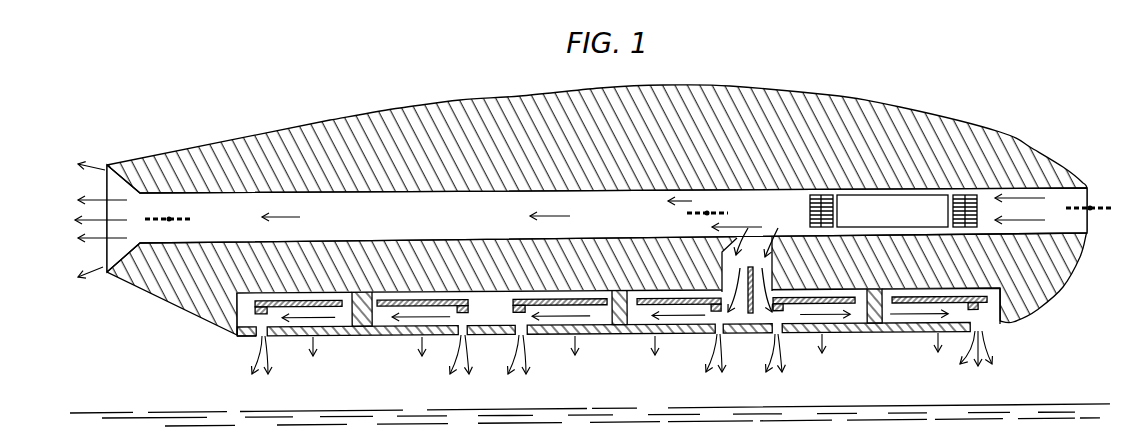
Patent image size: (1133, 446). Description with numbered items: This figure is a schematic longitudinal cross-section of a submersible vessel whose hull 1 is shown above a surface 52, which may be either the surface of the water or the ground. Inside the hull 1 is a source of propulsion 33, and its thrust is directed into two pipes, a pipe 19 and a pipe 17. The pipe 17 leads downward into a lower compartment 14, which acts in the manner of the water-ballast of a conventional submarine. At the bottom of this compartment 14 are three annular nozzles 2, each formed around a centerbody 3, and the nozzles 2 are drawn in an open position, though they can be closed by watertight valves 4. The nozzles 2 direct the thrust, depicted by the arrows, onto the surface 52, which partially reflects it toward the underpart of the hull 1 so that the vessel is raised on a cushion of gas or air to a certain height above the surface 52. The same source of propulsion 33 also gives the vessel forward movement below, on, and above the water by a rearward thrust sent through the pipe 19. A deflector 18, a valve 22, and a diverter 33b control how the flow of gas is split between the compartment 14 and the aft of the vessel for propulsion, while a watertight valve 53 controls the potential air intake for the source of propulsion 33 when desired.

The hull 1 is at (878, 96).
The annular nozzle 2 is at (272, 336).
The centerbody 3 is at (362, 327).
The watertight valve 4 is at (240, 335).
The compartment 14 is at (999, 303).
The pipe 17 is at (763, 267).
The deflector 18 is at (760, 331).
The pipe 19 is at (386, 213).
The valve 22 is at (192, 213).
The source of propulsion 33 is at (905, 213).
The diverter 33b is at (720, 213).
The surface 52 is at (118, 412).
The watertight valve 53 is at (1105, 203).